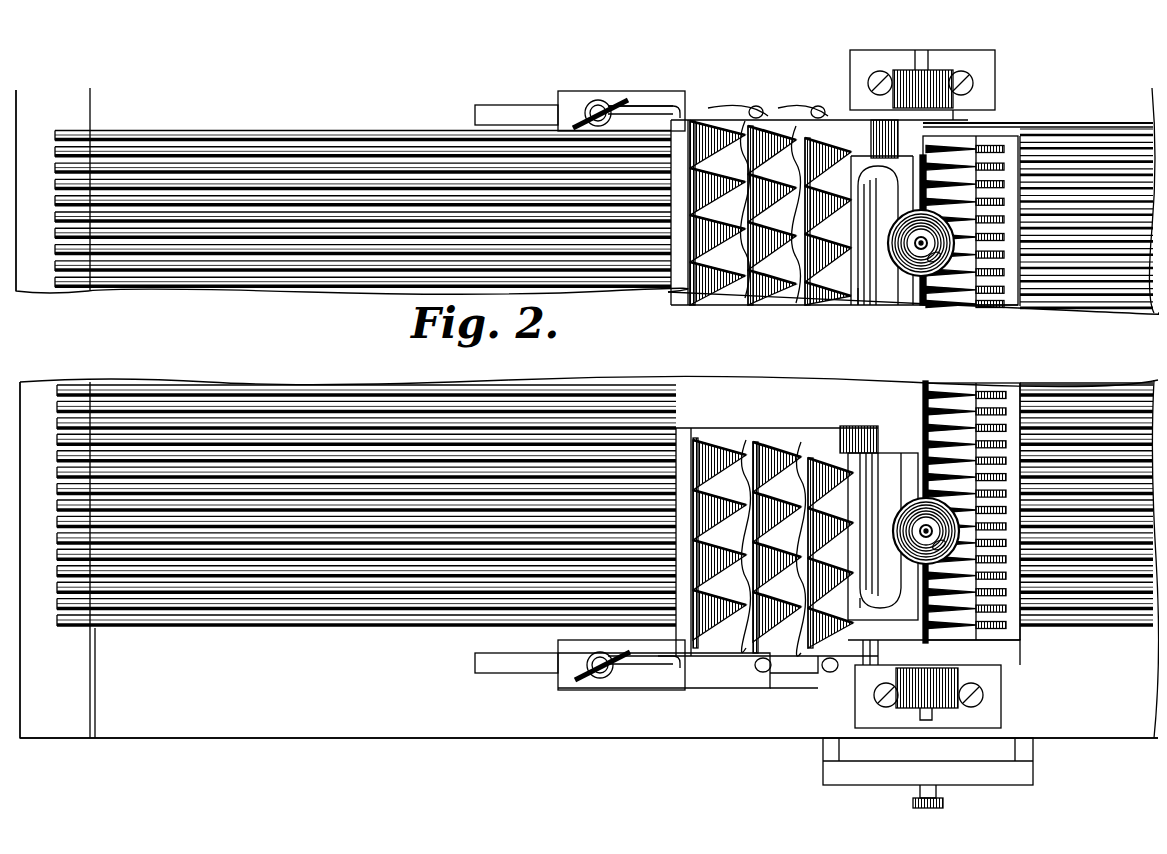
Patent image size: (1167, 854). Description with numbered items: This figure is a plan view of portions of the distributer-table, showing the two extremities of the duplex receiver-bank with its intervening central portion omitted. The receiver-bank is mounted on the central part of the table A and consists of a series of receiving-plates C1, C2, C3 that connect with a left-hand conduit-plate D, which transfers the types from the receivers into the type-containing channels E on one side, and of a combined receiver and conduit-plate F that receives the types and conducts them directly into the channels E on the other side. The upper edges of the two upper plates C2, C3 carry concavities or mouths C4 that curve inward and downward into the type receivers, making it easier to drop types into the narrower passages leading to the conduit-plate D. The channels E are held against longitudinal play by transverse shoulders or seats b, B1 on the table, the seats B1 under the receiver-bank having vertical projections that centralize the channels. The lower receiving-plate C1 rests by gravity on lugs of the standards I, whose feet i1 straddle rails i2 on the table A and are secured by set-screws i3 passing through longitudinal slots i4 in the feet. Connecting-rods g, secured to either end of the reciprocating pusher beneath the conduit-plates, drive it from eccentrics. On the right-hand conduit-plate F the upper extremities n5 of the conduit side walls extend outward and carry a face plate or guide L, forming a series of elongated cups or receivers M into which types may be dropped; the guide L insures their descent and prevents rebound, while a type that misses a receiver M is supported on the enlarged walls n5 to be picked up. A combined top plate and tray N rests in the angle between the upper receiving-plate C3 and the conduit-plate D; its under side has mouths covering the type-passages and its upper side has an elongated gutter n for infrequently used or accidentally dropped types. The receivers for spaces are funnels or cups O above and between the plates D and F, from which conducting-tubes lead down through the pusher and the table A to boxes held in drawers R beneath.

The type-containing channel E is at (604, 368).
The seat for type-containing channel ends B1 is at (589, 423).
The transverse shoulder or seat b is at (27, 414).
The connecting-rod g is at (1038, 117).
The combined receiver and conduit-plate F is at (1056, 385).
The rail i2 is at (516, 388).
The set-screw i3 is at (621, 390).
The longitudinal slot i4 is at (640, 698).
The foot or base of standard i1 is at (640, 95).
The lower receiving-plate C1 is at (729, 386).
The middle receiving-plate C2 is at (769, 389).
The upper receiving-plate C3 is at (829, 392).
The concavity or mouth C4 is at (771, 388).
The conduit-plate D is at (869, 388).
The combined top plate and tray N is at (883, 388).
The gutter n is at (869, 447).
The elongated cup or receiver M is at (992, 395).
The upper extremity of conduit side wall n5 is at (992, 388).
The face plate or guide L is at (1078, 366).
The funnel or cup for spaces O is at (923, 387).
The standard I is at (934, 389).
The table A is at (794, 699).
The drawer R is at (928, 773).